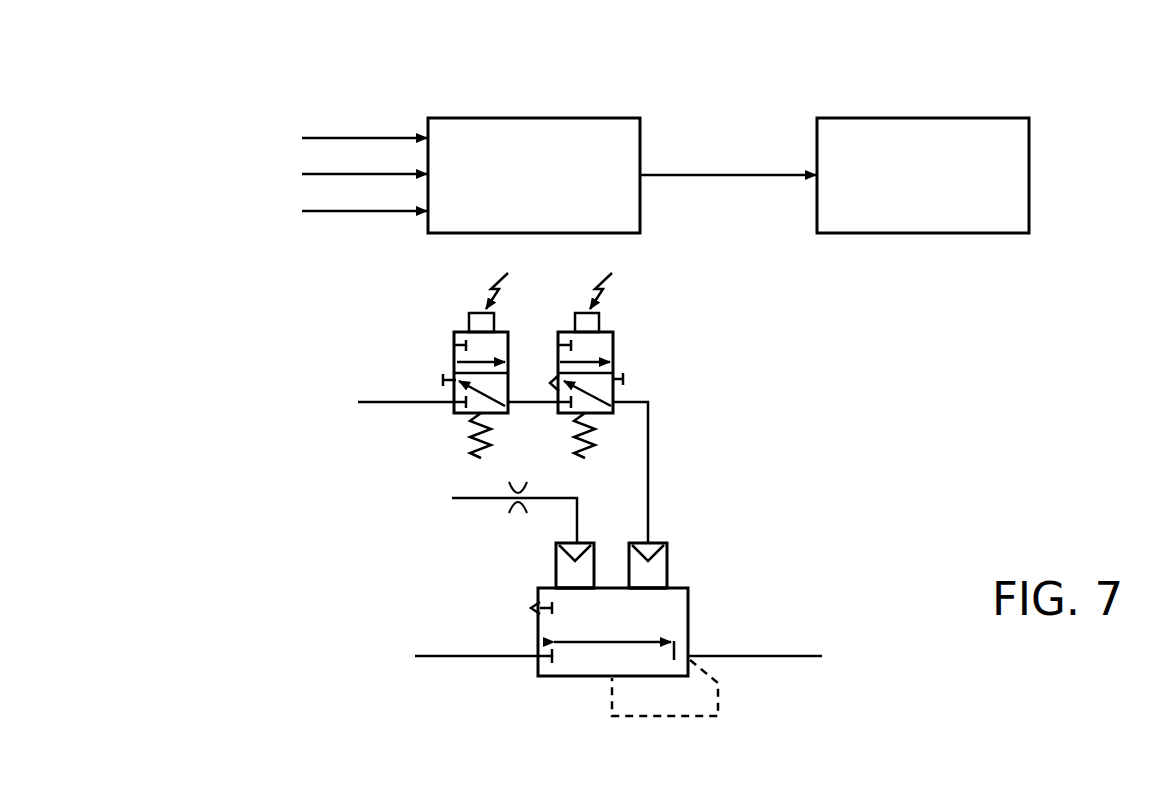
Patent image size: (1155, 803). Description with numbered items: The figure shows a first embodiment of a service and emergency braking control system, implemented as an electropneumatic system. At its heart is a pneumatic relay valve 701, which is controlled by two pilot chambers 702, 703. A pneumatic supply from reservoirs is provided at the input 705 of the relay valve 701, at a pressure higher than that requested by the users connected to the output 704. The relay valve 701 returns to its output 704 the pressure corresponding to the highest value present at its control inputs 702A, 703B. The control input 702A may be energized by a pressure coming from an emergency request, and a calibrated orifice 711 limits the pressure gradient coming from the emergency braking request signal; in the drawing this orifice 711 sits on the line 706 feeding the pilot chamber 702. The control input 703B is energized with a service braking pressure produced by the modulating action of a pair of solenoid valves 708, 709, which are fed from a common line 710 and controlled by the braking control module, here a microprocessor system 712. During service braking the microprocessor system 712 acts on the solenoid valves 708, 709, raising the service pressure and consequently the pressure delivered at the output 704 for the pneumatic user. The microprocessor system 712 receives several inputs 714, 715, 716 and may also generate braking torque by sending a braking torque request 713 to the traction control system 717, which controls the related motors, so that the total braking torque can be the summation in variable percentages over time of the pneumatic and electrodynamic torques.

The pneumatic relay valve 701 is at (688, 625).
The pilot chamber 702 is at (556, 565).
The control input 702A is at (577, 588).
The pilot chamber 703 is at (667, 568).
The control input 703B is at (650, 588).
The output 704 is at (785, 656).
The input 705 is at (452, 658).
The supply line 706 is at (452, 498).
The solenoid valve 708 is at (466, 332).
The solenoid valve 709 is at (607, 343).
The pressure line 710 is at (375, 402).
The calibrated orifice 711 is at (518, 485).
The microprocessor system 712 is at (558, 118).
The braking torque request 713 is at (705, 172).
The first input signal 714 is at (333, 137).
The second input signal 715 is at (322, 174).
The third input signal 716 is at (317, 211).
The traction control system 717 is at (940, 118).